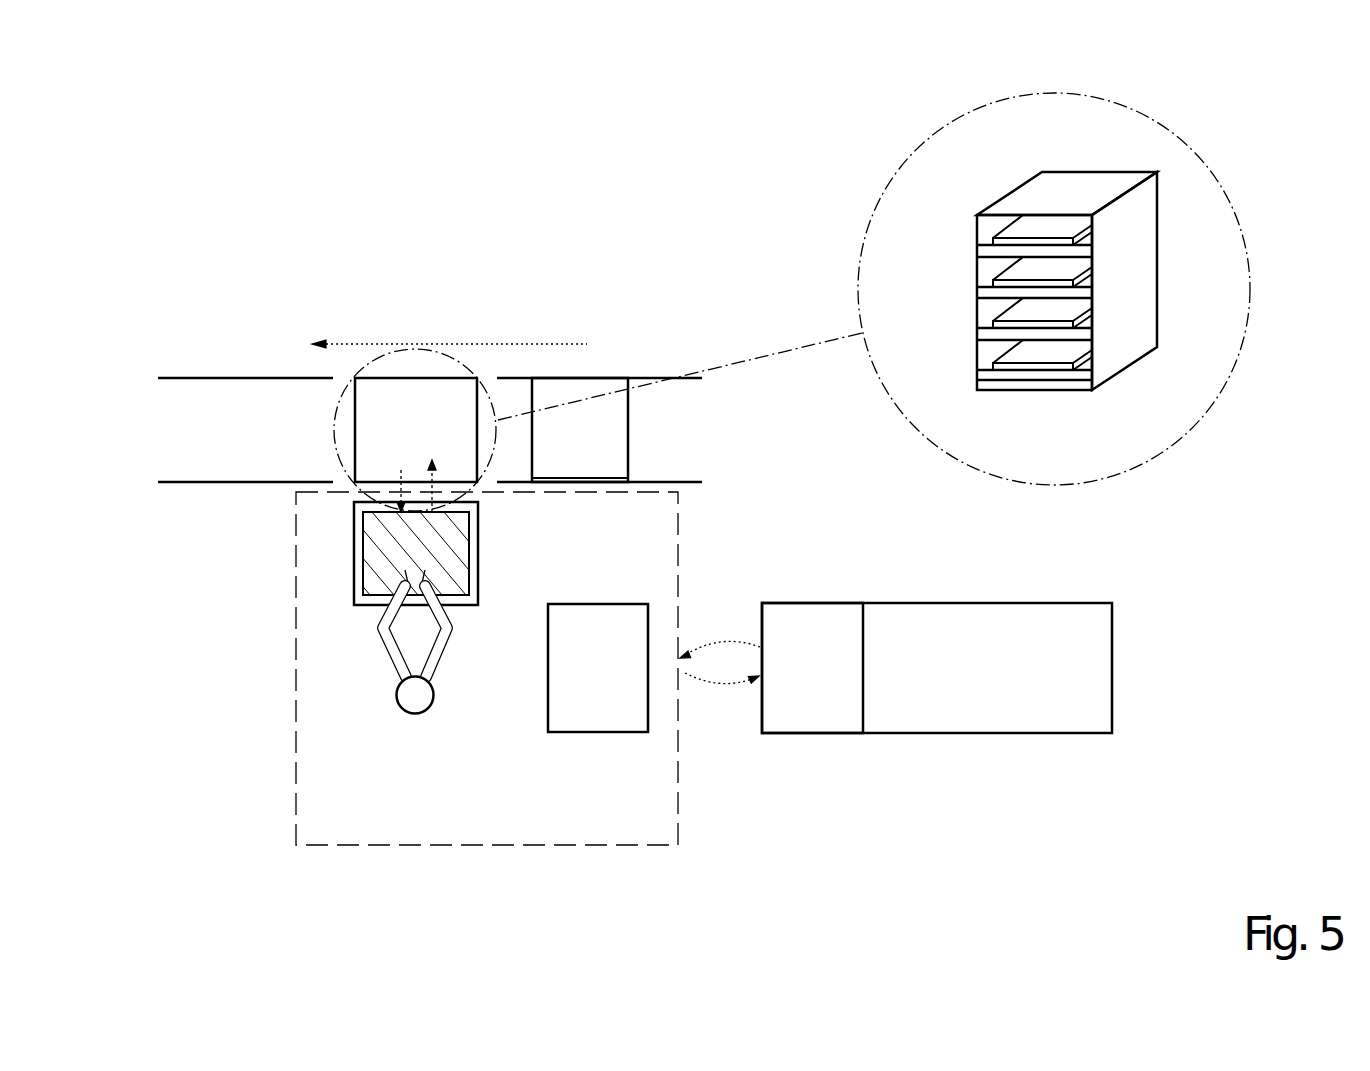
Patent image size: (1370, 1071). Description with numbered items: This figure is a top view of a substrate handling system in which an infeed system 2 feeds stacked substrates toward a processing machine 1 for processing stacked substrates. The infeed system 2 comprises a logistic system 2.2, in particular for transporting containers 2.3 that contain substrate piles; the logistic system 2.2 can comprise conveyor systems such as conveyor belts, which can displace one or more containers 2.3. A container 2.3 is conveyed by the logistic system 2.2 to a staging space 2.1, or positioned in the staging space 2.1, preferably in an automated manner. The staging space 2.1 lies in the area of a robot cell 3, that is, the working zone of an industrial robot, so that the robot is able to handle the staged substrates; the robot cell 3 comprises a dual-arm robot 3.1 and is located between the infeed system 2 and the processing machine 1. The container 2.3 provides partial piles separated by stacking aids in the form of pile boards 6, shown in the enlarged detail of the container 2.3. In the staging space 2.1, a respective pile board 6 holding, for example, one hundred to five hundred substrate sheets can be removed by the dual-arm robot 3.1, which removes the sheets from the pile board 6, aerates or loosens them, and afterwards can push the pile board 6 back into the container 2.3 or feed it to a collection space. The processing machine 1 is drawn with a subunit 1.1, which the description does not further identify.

The processing machine 1 is at (1143, 584).
The control module 1.1 is at (812, 668).
The infeed system 2 is at (352, 264).
The staging space 2.1 is at (358, 565).
The logistic system 2.2 is at (634, 343).
The container 2.3 is at (1018, 202).
The robot cell 3 is at (701, 817).
The dual-arm robot 3.1 is at (313, 725).
The pile board 6 is at (1073, 255).